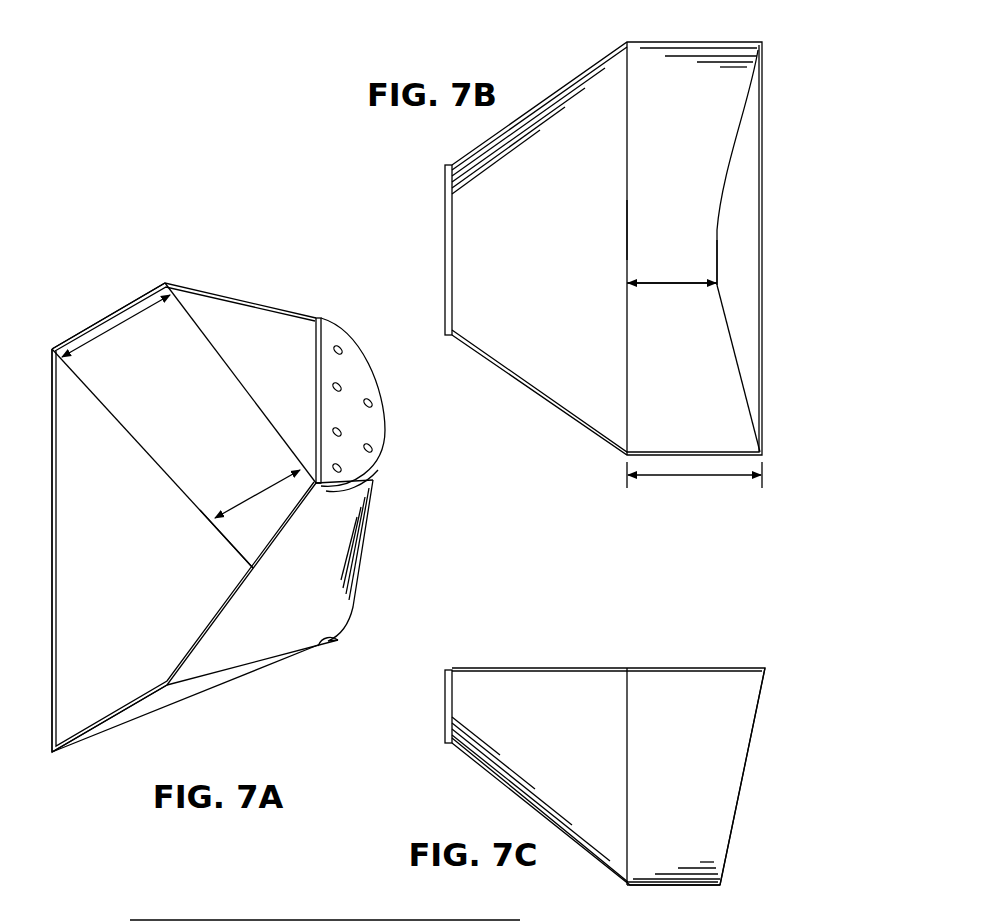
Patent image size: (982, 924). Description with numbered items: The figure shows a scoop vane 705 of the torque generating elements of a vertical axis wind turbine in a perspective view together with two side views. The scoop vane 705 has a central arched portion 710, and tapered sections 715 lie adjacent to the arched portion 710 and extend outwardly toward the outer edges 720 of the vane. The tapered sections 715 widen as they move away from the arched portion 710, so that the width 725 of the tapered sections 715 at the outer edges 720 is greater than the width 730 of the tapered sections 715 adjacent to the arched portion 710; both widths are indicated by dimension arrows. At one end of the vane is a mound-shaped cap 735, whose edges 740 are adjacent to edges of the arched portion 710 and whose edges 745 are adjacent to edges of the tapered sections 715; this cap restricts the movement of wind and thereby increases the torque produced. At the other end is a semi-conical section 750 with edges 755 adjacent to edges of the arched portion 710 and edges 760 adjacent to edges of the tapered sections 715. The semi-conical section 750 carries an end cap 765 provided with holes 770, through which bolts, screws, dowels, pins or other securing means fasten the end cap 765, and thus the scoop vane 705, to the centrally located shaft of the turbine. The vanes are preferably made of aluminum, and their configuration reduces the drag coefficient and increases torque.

In FIG. 7A, the scoop vane 705 is at (243, 285).
In FIG. 7B, the scoop vane 705 is at (553, 66).
In FIG. 7C, the scoop vane 705 is at (684, 655).
In FIG. 7A, the arched portion 710 is at (268, 512).
In FIG. 7B, the arched portion 710 is at (660, 184).
In FIG. 7C, the arched portion 710 is at (688, 884).
In FIG. 7A, the tapered sections 715 is at (202, 426).
In FIG. 7B, the tapered sections 715 is at (671, 100).
In FIG. 7C, the tapered sections 715 is at (673, 752).
In FIG. 7A, the outer edges 720 is at (103, 320).
In FIG. 7A, the width of the tapered sections at the outer edges 725 is at (125, 335).
In FIG. 7B, the width of the tapered sections at the outer edges 725 is at (695, 482).
In FIG. 7A, the width of the tapered sections adjacent to the arched portion 730 is at (266, 496).
In FIG. 7B, the width of the tapered sections adjacent to the arched portion 730 is at (672, 290).
In FIG. 7A, the mound-shaped cap 735 is at (138, 584).
In FIG. 7B, the mound-shaped cap 735 is at (748, 191).
In FIG. 7C, the mound-shaped cap 735 is at (744, 775).
In FIG. 7A, the edges of the mound-shaped cap adjacent to the arched portion 740 is at (250, 554).
In FIG. 7B, the edges of the mound-shaped cap adjacent to the arched portion 740 is at (720, 247).
In FIG. 7A, the edges of the mound-shaped cap adjacent to the tapered sections 745 is at (146, 459).
In FIG. 7B, the edges of the mound-shaped cap adjacent to the tapered sections 745 is at (744, 112).
In FIG. 7A, the semi-conical section 750 is at (282, 367).
In FIG. 7B, the semi-conical section 750 is at (536, 255).
In FIG. 7C, the semi-conical section 750 is at (528, 752).
In FIG. 7A, the edges of the semi-conical section adjacent to the arched portion 755 is at (300, 455).
In FIG. 7B, the edges of the semi-conical section adjacent to the arched portion 755 is at (627, 231).
In FIG. 7A, the edges of the semi-conical section adjacent to the tapered sections 760 is at (222, 372).
In FIG. 7B, the edges of the semi-conical section adjacent to the tapered sections 760 is at (627, 124).
In FIG. 7A, the end cap 765 is at (372, 428).
In FIG. 7B, the end cap 765 is at (445, 248).
In FIG. 7C, the end cap 765 is at (445, 707).
In FIG. 7A, the holes 770 is at (344, 344).